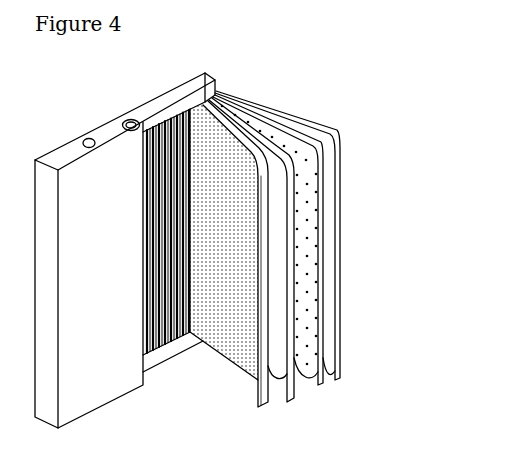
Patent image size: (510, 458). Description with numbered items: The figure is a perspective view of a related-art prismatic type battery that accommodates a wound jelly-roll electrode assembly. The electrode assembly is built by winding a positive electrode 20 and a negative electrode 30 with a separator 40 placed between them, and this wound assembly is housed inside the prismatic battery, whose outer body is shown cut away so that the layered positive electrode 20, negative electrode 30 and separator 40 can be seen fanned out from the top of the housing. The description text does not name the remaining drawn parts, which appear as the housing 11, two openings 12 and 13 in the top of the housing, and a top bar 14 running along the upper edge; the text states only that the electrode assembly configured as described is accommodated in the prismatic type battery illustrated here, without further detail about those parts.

The case 11 is at (153, 358).
The electrolyte injection hole 12 is at (83, 139).
The safety vent 13 is at (124, 118).
The cap plate 14 is at (163, 100).
The positive electrode 20 is at (266, 401).
The negative electrode 30 is at (323, 292).
The separator 40 is at (295, 236).